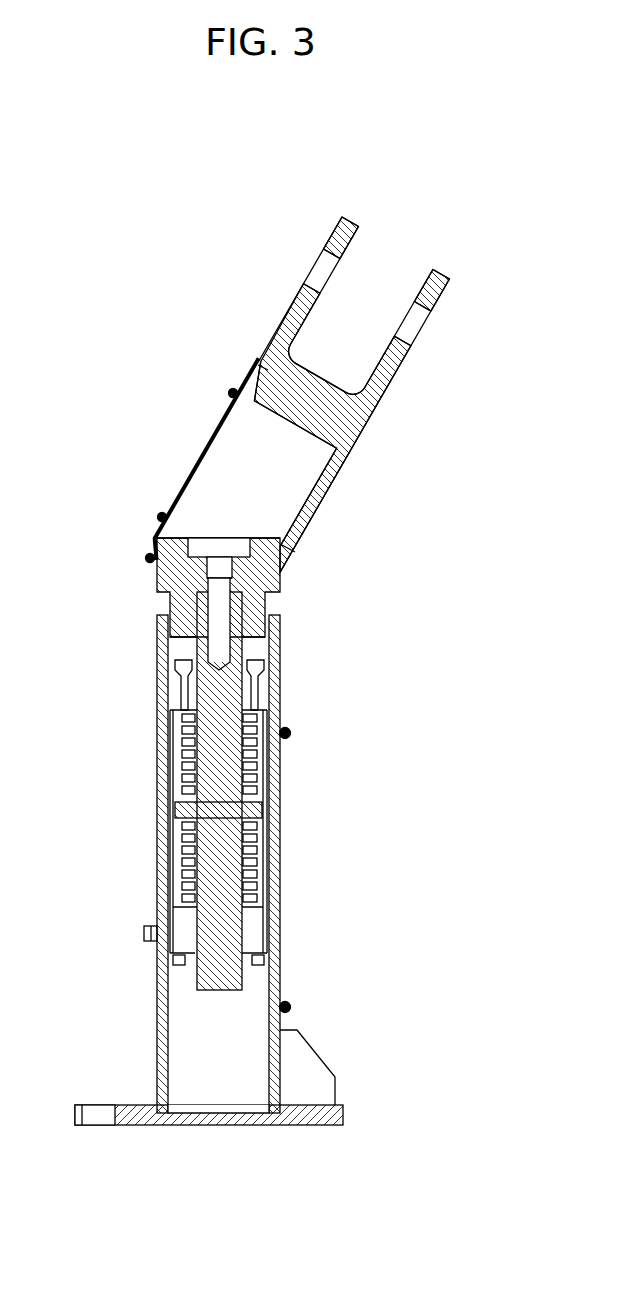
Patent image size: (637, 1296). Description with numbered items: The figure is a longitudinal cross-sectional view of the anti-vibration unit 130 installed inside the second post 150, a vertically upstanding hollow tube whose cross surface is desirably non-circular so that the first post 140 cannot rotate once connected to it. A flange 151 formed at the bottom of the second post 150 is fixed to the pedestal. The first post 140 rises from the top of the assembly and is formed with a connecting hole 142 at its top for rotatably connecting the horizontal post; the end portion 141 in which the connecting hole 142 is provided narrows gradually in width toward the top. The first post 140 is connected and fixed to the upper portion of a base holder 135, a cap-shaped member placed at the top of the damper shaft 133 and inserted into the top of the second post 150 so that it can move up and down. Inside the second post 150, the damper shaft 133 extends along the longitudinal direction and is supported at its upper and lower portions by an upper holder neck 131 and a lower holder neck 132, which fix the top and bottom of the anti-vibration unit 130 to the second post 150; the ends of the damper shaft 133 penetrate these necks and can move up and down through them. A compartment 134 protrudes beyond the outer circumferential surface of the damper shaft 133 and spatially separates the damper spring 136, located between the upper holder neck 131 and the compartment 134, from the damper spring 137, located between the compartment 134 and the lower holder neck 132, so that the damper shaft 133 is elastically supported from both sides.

The anti-vibration unit 130 is at (316, 825).
The upper holder neck 131 is at (258, 647).
The lower holder neck 132 is at (253, 932).
The damper shaft 133 is at (217, 705).
The compartment 134 is at (255, 810).
The base holder 135 is at (258, 605).
The damper spring 136 is at (252, 753).
The damper spring 137 is at (292, 862).
The first post 140 is at (223, 480).
The end portion 141 is at (288, 321).
The connecting hole 142 is at (313, 263).
The second post 150 is at (283, 990).
The flange 151 is at (328, 1114).